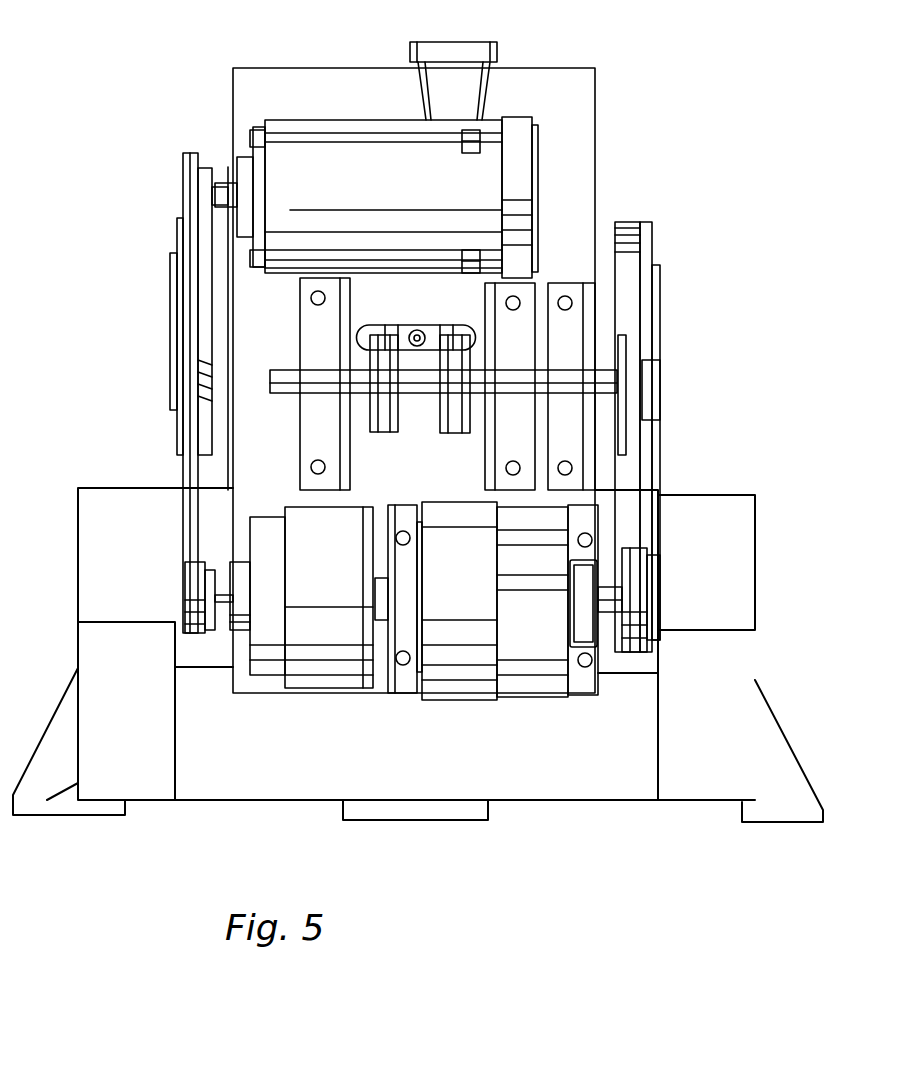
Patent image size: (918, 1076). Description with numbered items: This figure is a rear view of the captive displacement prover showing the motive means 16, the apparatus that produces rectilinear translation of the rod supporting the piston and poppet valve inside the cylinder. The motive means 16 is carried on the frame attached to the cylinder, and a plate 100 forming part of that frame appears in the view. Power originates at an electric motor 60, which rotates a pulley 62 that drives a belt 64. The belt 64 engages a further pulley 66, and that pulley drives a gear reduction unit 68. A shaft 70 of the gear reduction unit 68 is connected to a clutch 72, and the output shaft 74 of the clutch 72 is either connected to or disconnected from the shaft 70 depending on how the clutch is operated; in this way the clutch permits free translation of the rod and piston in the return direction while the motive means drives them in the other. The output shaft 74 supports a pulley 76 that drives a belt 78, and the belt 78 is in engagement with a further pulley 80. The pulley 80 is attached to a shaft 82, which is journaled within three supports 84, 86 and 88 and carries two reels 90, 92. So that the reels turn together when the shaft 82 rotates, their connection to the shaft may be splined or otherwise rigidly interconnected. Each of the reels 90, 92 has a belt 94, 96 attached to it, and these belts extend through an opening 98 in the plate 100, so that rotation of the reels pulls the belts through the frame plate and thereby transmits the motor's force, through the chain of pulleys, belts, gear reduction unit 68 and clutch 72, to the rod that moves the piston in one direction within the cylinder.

The plate 100 is at (565, 83).
The motive means 16 is at (538, 210).
The electric motor 60 is at (292, 168).
The pulley 62 is at (183, 154).
The belt 64 is at (185, 470).
The pulley 66 is at (183, 620).
The gear reduction unit 68 is at (334, 692).
The shaft 70 is at (383, 622).
The clutch 72 is at (528, 658).
The output shaft 74 is at (608, 617).
The pulley 76 is at (647, 552).
The belt 78 is at (640, 466).
The pulley 80 is at (638, 338).
The shaft 82 is at (278, 370).
The support 84 is at (576, 335).
The support 86 is at (485, 298).
The support 88 is at (352, 298).
The reel 90 is at (445, 432).
The reel 92 is at (398, 432).
The belt 94 is at (454, 332).
The belt 96 is at (386, 333).
The opening 98 is at (360, 332).